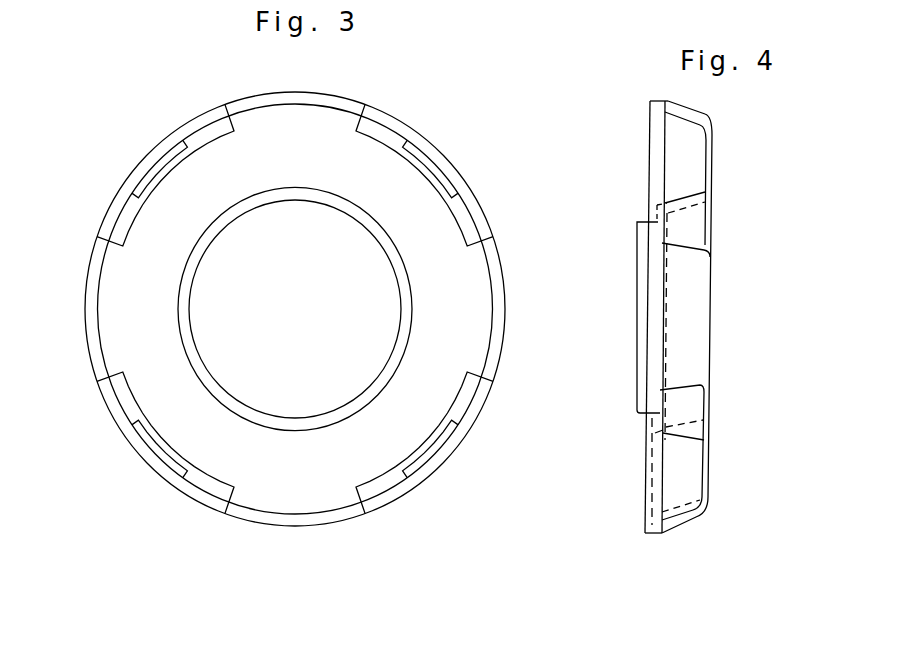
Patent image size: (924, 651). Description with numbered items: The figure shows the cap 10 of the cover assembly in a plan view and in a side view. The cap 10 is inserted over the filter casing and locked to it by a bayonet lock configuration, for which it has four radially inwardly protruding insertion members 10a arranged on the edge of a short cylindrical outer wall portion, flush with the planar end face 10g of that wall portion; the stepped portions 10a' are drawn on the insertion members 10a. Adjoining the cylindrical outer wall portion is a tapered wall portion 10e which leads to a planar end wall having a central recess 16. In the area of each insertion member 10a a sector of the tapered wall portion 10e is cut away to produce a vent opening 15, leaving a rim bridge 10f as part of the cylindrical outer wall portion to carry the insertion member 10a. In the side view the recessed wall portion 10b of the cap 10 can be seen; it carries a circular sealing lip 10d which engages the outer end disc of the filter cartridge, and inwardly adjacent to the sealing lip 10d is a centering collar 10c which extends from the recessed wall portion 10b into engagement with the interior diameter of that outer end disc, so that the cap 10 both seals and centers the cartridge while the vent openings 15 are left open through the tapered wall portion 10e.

In FIG. 3, the cap 10 is at (458, 160).
In FIG. 4, the cap 10 is at (693, 538).
In FIG. 3, the insertion member 10a is at (148, 323).
In FIG. 4, the insertion member 10a is at (631, 555).
In FIG. 3, the tab step 10a' is at (172, 333).
In FIG. 4, the recessed wall portion 10b is at (667, 350).
In FIG. 4, the centering collar 10c is at (650, 222).
In FIG. 4, the sealing lip 10d is at (645, 442).
In FIG. 3, the tapered wall portion 10e is at (497, 310).
In FIG. 4, the tapered wall portion 10e is at (688, 285).
In FIG. 4, the rim bridge 10f is at (655, 148).
In FIG. 4, the planar end face 10g is at (650, 103).
In FIG. 3, the vent opening 15 is at (383, 130).
In FIG. 4, the vent opening 15 is at (690, 167).
In FIG. 3, the central recess 16 is at (326, 288).
In FIG. 4, the central recess 16 is at (700, 410).